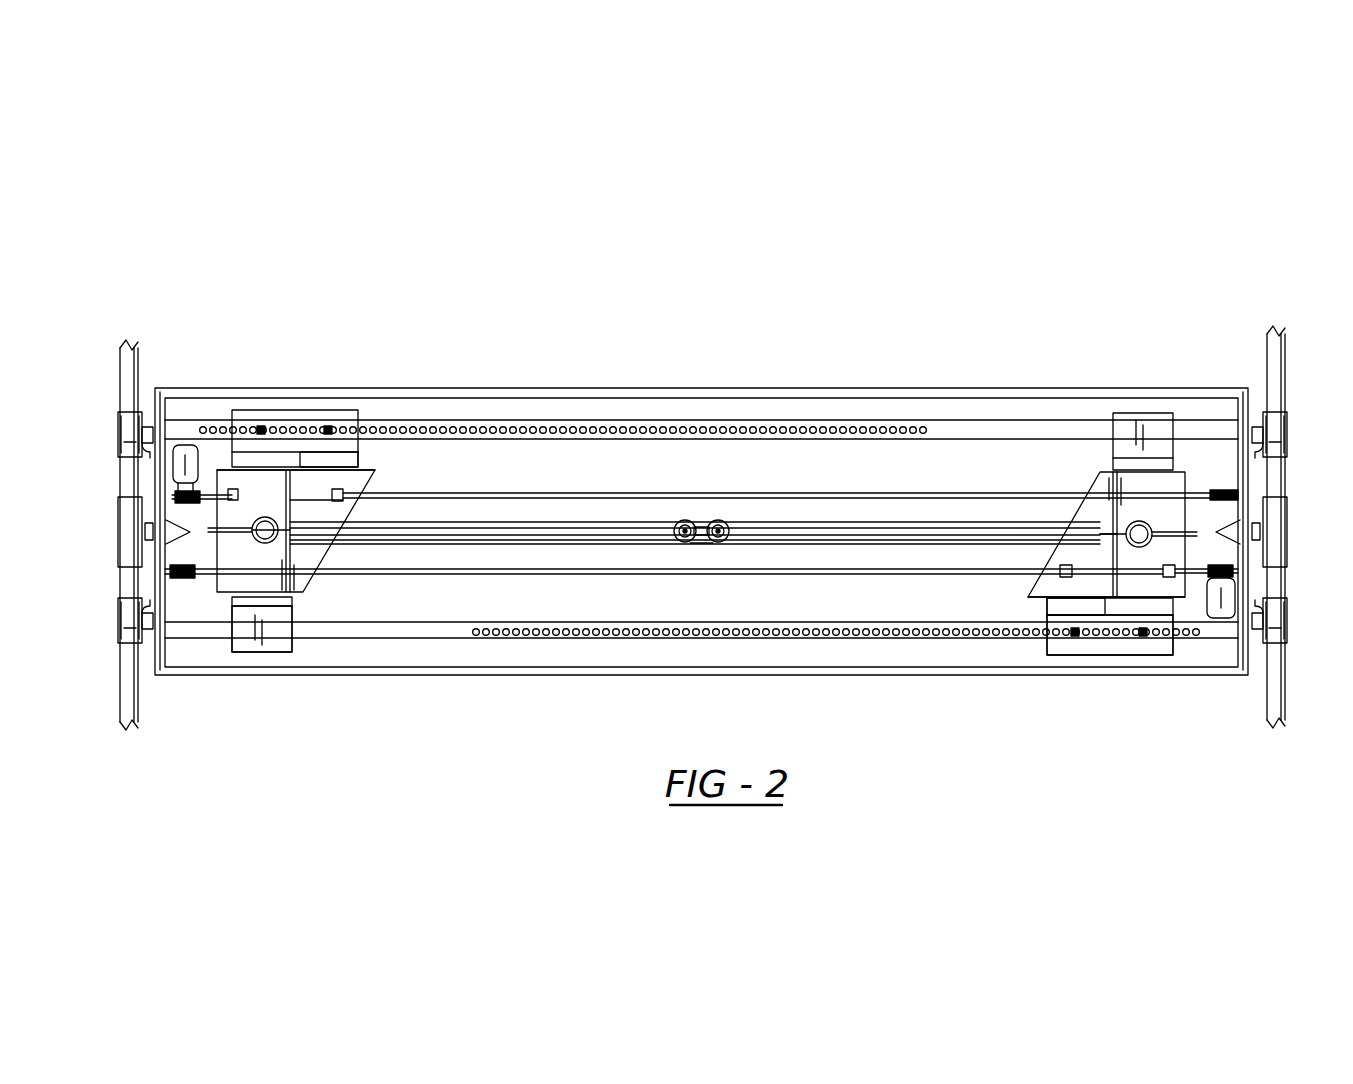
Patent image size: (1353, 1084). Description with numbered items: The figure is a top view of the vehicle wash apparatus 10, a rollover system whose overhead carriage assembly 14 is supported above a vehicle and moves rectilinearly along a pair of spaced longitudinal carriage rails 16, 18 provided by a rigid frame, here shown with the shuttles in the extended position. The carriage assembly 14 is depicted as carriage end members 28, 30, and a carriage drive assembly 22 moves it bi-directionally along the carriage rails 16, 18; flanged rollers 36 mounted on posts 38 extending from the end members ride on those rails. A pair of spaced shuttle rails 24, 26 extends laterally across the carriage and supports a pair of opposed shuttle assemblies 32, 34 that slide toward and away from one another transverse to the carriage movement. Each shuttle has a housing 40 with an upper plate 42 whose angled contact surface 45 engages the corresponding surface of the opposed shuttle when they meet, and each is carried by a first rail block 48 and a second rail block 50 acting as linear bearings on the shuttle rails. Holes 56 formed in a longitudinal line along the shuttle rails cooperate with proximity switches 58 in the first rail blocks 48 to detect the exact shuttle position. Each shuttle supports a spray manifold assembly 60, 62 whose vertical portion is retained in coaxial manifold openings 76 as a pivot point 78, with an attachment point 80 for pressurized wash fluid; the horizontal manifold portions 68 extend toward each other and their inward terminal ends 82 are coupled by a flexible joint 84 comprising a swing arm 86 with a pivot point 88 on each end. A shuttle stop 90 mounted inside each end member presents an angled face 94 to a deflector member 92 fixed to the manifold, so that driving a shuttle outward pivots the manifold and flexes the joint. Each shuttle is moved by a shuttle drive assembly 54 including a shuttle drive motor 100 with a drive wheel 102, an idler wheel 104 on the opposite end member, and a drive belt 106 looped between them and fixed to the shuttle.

The vehicle wash apparatus 10 is at (541, 290).
The carriage assembly 14 is at (613, 304).
The carriage rail 16 is at (139, 352).
The carriage rail 18 is at (1273, 690).
The carriage drive assembly 22 is at (118, 522).
The shuttle rail 24 is at (928, 440).
The shuttle rail 26 is at (530, 622).
The carriage end member 28 is at (178, 662).
The carriage end member 30 is at (1230, 396).
The shuttle assembly 32 is at (260, 632).
The shuttle assembly 34 is at (1070, 656).
The flanged roller 36 is at (118, 436).
The post 38 is at (142, 437).
The housing 40 is at (373, 470).
The upper plate 42 is at (305, 580).
The contact surface 45 is at (356, 478).
The first rail block 48 is at (360, 440).
The second rail block 50 is at (298, 648).
The shuttle drive assembly 54 is at (196, 445).
The holes 56 is at (708, 428).
The proximity switch 58 is at (330, 432).
The spray manifold assembly 60 is at (470, 520).
The spray manifold assembly 62 is at (925, 497).
The horizontal manifold portion 68 is at (568, 518).
The manifold opening 76 is at (270, 520).
The pivot point 78 is at (276, 536).
The attachment point 80 is at (278, 545).
The inward terminal end 82 is at (684, 519).
The flexible joint 84 is at (697, 546).
The swing arm 86 is at (702, 522).
The pivot point 88 is at (690, 545).
The shuttle stop 90 is at (134, 545).
The deflector member 92 is at (226, 532).
The angled face 94 is at (180, 500).
The shuttle drive motor 100 is at (196, 455).
The drive wheel 102 is at (1300, 574).
The idler wheel 104 is at (185, 578).
The drive belt 106 is at (505, 492).